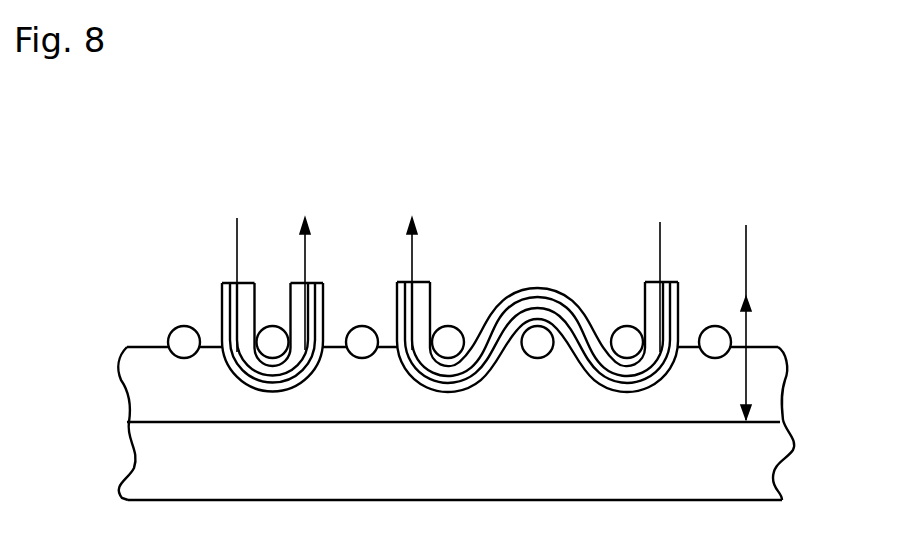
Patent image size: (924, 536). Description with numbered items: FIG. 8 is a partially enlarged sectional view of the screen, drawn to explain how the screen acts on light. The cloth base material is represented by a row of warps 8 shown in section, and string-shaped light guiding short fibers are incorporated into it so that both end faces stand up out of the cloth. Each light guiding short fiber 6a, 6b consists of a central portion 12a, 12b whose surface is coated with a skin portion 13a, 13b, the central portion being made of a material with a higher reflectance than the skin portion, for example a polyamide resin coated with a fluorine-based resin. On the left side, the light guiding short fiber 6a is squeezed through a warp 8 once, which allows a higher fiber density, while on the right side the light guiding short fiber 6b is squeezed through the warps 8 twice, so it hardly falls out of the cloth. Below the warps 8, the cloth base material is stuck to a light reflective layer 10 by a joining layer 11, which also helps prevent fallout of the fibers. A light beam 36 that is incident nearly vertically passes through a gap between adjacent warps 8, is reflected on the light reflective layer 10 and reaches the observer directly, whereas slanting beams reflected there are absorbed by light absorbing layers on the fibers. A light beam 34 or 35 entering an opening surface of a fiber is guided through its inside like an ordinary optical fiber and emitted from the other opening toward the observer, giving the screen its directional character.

The light guiding short fiber 6a is at (217, 286).
The light guiding short fiber 6b is at (537, 288).
The warp 8 is at (172, 331).
The light reflective layer 10 is at (765, 460).
The joining layer 11 is at (784, 352).
The central portion 12a is at (238, 285).
The central portion 12b is at (415, 281).
The skin portion 13a is at (222, 296).
The skin portion 13b is at (434, 294).
The light beam 34 is at (238, 230).
The light beam 35 is at (660, 237).
The light beam 36 is at (746, 252).